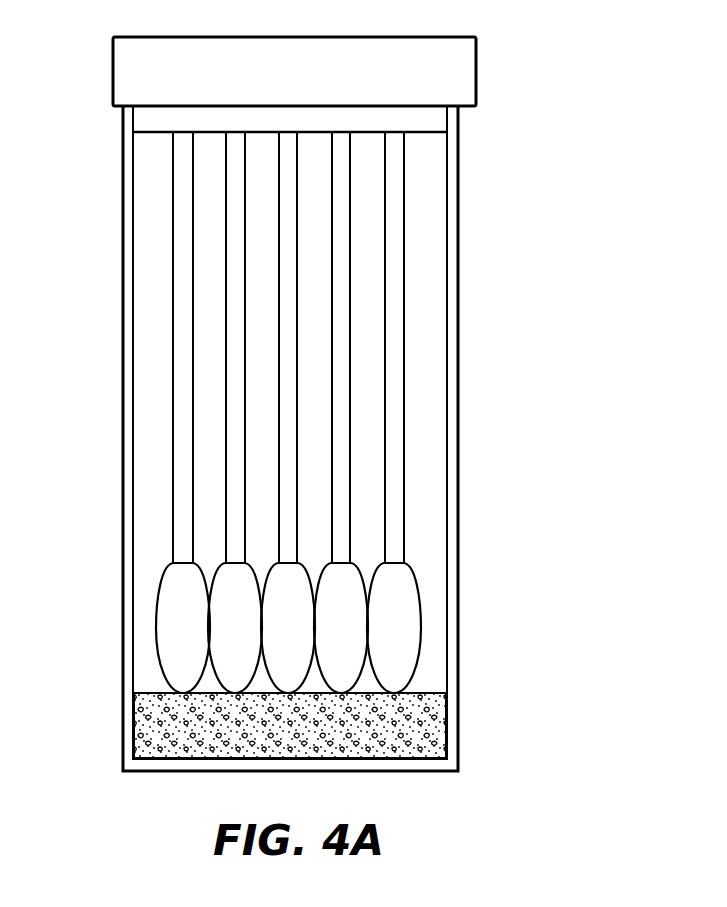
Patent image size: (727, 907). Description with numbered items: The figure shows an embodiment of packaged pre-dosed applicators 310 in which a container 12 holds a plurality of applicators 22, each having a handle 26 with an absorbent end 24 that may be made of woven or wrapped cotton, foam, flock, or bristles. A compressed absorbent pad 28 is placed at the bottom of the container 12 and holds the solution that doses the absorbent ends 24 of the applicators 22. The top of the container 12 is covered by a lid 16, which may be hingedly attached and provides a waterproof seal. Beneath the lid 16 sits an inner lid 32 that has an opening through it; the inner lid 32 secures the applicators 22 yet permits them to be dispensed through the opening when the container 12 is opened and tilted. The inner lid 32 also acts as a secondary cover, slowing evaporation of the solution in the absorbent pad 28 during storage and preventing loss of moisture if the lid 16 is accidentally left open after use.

The packaged pre-dosed applicators 310 is at (527, 142).
The lid 16 is at (476, 65).
The container 12 is at (122, 430).
The inner lid 32 is at (428, 125).
The applicators 22 is at (414, 399).
The handle 26 is at (403, 288).
The absorbent end 24 is at (418, 622).
The compressed absorbent pad 28 is at (400, 737).